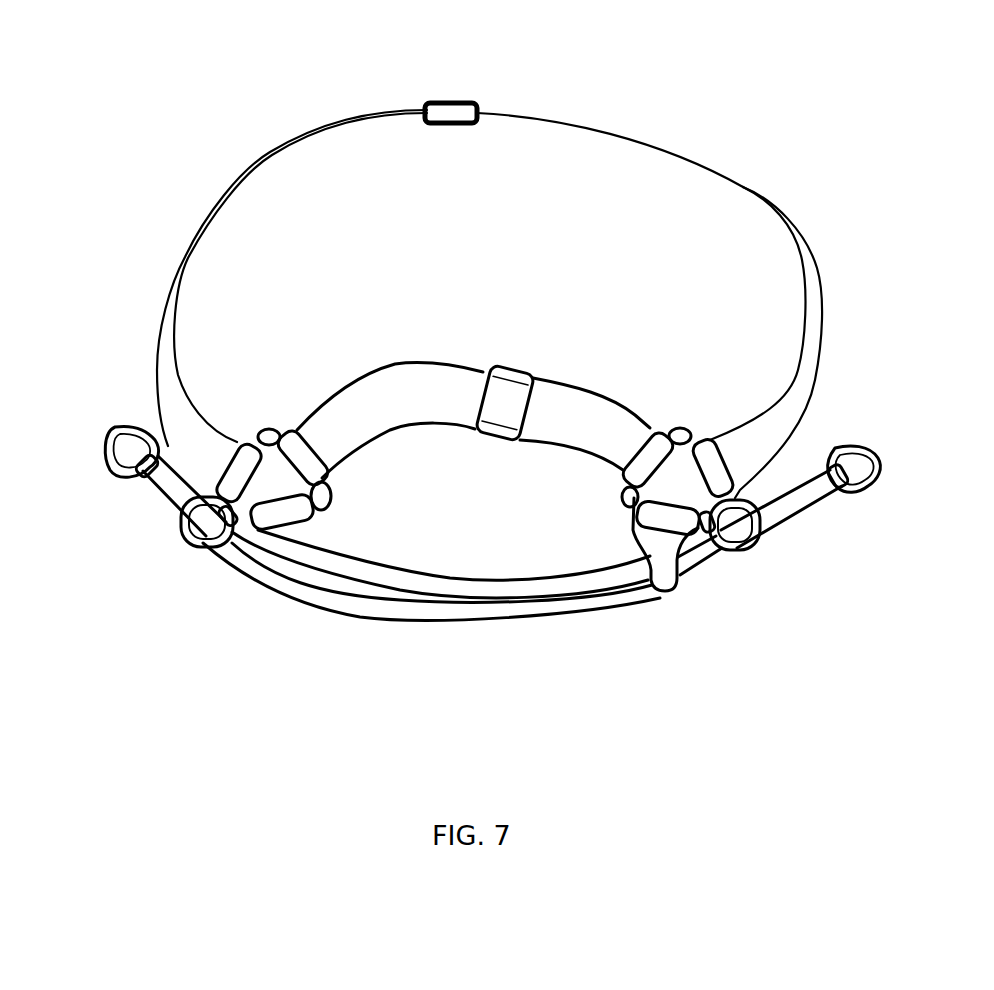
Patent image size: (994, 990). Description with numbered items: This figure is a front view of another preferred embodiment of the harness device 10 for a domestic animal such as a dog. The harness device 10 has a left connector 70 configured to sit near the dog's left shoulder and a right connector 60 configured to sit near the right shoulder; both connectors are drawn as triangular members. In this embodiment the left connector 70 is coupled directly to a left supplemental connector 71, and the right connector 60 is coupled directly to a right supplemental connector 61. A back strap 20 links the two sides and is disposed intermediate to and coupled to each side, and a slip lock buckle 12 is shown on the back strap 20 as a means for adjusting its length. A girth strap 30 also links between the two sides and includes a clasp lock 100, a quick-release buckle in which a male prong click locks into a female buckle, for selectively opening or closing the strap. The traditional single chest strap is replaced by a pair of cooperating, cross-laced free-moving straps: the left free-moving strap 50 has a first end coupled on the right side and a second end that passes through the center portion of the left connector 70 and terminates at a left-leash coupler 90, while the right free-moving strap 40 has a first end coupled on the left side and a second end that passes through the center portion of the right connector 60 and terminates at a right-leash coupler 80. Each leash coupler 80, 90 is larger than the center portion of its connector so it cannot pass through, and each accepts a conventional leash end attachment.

The harness device 10 is at (316, 688).
The slip lock buckle 12 is at (506, 388).
The back strap 20 is at (410, 388).
The girth strap 30 is at (258, 162).
The right free-moving strap 40 is at (162, 485).
The left free-moving strap 50 is at (327, 552).
The right connector 60 is at (192, 541).
The right supplemental connector 61 is at (258, 432).
The left connector 70 is at (745, 548).
The left supplemental connector 71 is at (686, 432).
The right-leash coupler 80 is at (110, 432).
The left-leash coupler 90 is at (848, 447).
The clasp lock 100 is at (440, 108).